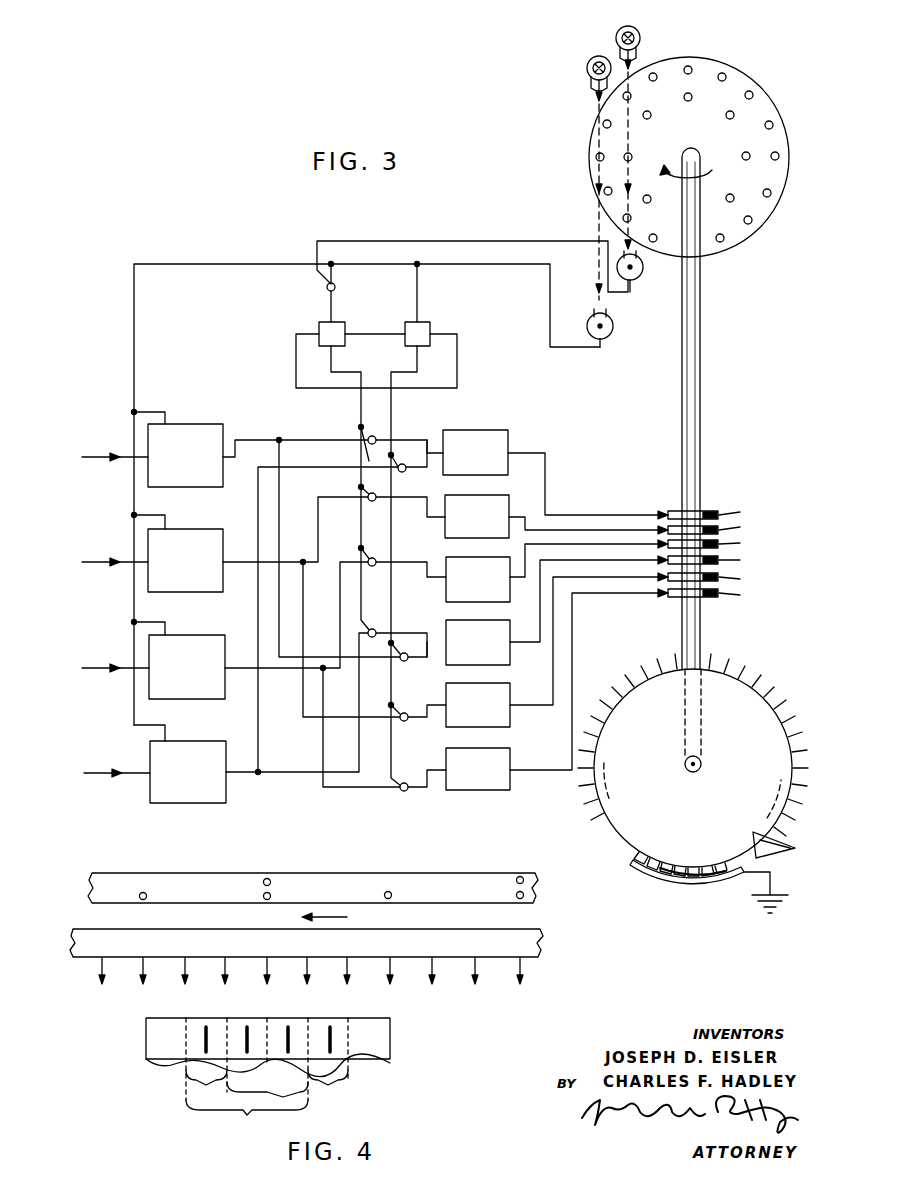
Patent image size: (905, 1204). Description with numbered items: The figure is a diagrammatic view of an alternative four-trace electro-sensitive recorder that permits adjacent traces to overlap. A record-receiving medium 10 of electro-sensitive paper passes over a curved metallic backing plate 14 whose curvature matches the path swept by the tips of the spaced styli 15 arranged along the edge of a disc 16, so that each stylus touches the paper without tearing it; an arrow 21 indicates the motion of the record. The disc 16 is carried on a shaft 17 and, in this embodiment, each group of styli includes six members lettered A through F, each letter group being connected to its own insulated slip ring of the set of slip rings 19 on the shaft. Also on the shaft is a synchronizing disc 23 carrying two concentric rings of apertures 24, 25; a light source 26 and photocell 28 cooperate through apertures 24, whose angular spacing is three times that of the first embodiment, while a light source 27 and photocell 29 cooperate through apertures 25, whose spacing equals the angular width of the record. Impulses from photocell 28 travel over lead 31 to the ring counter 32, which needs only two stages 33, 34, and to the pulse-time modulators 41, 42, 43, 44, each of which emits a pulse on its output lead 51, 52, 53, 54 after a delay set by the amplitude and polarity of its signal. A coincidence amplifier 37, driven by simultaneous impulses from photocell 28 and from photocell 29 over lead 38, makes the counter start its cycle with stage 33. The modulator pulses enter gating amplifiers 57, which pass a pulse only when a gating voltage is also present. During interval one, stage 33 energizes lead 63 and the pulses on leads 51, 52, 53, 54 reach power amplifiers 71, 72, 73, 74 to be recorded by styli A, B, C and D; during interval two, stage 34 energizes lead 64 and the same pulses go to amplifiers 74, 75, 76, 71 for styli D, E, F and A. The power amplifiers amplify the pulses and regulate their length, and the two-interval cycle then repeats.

In FIG. 3, the record-receiving medium 10 is at (639, 866).
In FIG. 4, the record-receiving medium 10 is at (390, 1049).
In FIG. 3, the curved metallic backing plate 14 is at (680, 880).
In FIG. 3, the styli 15 is at (786, 846).
In FIG. 4, the styli 15 is at (432, 986).
In FIG. 3, the disc 16 is at (752, 690).
In FIG. 4, the disc 16 is at (74, 940).
In FIG. 3, the shaft 17 is at (702, 418).
In FIG. 3, the slip rings 19 is at (674, 508).
In FIG. 4, the direction of movement arrow 21 is at (340, 918).
In FIG. 3, the synchronizing disc 23 is at (736, 75).
In FIG. 4, the synchronizing disc 23 is at (90, 890).
In FIG. 3, the apertures 24 is at (778, 154).
In FIG. 4, the apertures 24 is at (518, 891).
In FIG. 3, the apertures 25 is at (734, 200).
In FIG. 4, the apertures 25 is at (268, 878).
In FIG. 3, the light source 26 is at (587, 62).
In FIG. 3, the light source 27 is at (616, 32).
In FIG. 3, the photocell 28 is at (612, 333).
In FIG. 3, the photocell 29 is at (640, 283).
In FIG. 3, the lead 31 is at (137, 328).
In FIG. 3, the ring counter 32 is at (295, 336).
In FIG. 3, the counter stage 33 is at (346, 322).
In FIG. 3, the counter stage 34 is at (431, 322).
In FIG. 3, the coincidence amplifier 37 is at (326, 288).
In FIG. 3, the lead 38 is at (456, 240).
In FIG. 3, the pulse-time modulator 41 is at (180, 424).
In FIG. 3, the pulse-time modulator 42 is at (190, 529).
In FIG. 3, the pulse-time modulator 43 is at (190, 635).
In FIG. 3, the pulse-time modulator 44 is at (190, 741).
In FIG. 3, the output lead 51 is at (244, 438).
In FIG. 3, the output lead 52 is at (235, 559).
In FIG. 3, the output lead 53 is at (237, 661).
In FIG. 3, the output lead 54 is at (238, 777).
In FIG. 3, the gating amplifiers 57 is at (394, 474).
In FIG. 3, the output lead 63 is at (359, 408).
In FIG. 3, the output lead 64 is at (393, 408).
In FIG. 3, the power amplifier 71 is at (488, 430).
In FIG. 3, the power amplifier 72 is at (490, 495).
In FIG. 3, the power amplifier 73 is at (470, 556).
In FIG. 3, the power amplifier 74 is at (496, 620).
In FIG. 3, the power amplifier 75 is at (496, 683).
In FIG. 3, the power amplifier 76 is at (496, 748).